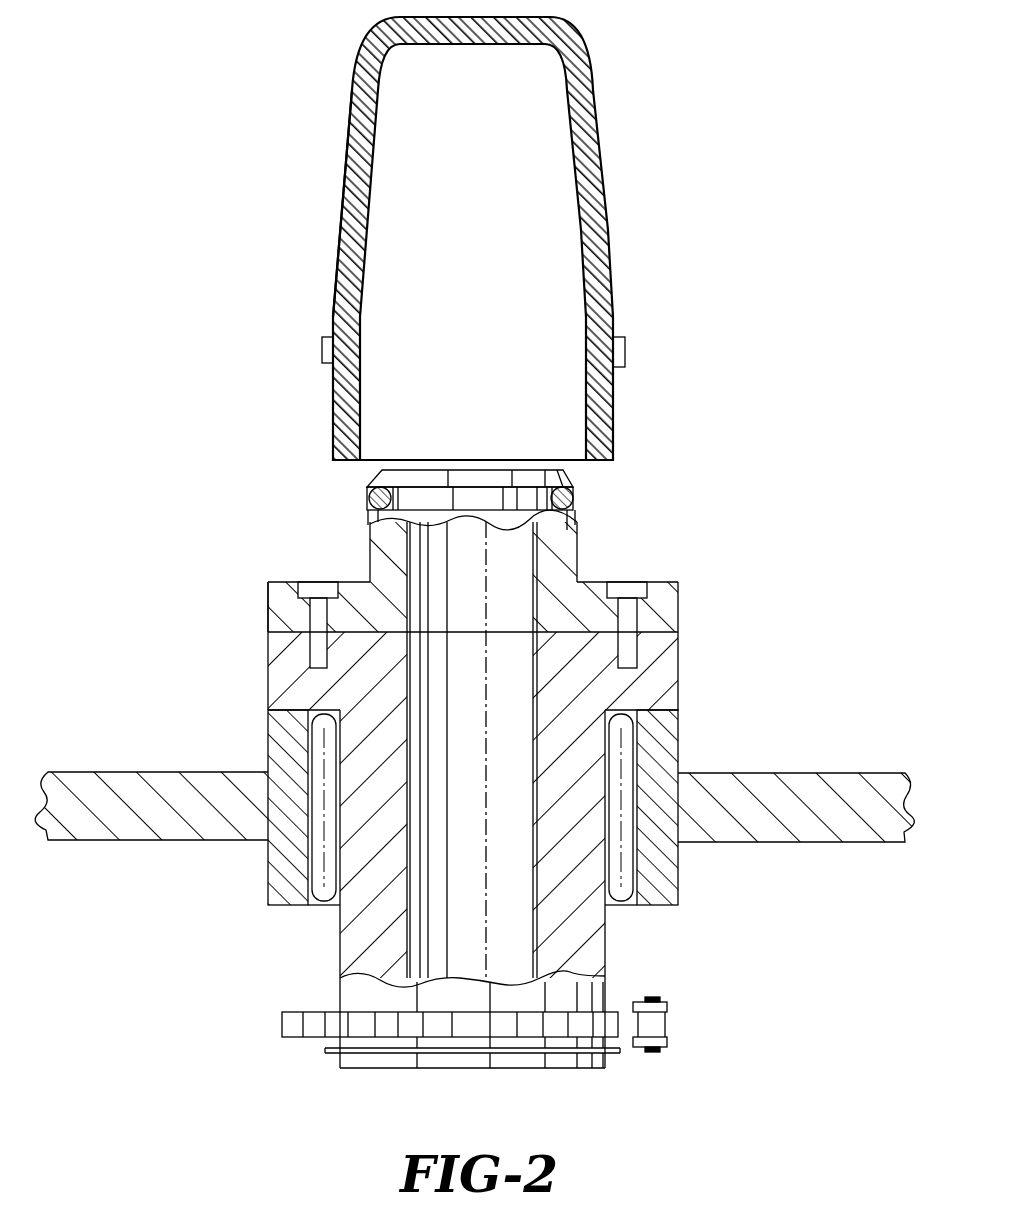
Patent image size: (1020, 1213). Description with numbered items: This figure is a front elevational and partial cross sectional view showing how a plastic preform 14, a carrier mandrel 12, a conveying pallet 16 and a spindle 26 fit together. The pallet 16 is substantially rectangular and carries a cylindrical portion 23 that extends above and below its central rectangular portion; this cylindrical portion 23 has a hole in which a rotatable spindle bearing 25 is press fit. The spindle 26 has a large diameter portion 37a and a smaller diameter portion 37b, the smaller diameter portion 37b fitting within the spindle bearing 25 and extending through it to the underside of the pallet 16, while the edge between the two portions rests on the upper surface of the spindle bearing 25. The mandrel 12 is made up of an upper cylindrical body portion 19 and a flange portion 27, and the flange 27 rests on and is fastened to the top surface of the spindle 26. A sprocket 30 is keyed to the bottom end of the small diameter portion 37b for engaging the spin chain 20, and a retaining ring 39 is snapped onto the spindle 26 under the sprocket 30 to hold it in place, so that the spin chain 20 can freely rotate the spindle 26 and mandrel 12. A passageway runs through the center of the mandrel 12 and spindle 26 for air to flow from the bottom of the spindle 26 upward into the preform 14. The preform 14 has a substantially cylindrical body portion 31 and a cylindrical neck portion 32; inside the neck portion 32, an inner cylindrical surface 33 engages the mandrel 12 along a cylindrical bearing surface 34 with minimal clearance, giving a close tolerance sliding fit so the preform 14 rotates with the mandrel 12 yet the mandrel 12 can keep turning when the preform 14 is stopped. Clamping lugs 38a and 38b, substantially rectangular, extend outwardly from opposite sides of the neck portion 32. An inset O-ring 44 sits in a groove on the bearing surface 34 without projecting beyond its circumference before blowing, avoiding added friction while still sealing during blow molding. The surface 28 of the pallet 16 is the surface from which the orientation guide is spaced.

The mandrel 12 is at (268, 608).
The preform 14 is at (592, 208).
The pallet 16 is at (840, 825).
The upper cylindrical body portion 19 is at (572, 540).
The spin chain 20 is at (660, 1003).
The cylindrical portion 23 is at (268, 740).
The spindle bearing 25 is at (627, 867).
The spindle 26 is at (268, 680).
The flange portion 27 is at (665, 613).
The surface 28 is at (762, 773).
The sprocket 30 is at (622, 1030).
The body portion 31 is at (340, 240).
The neck portion 32 is at (333, 405).
The inner cylindrical surface 33 is at (360, 413).
The cylindrical bearing surface 34 is at (578, 556).
The large diameter portion 37a is at (677, 670).
The small diameter portion 37b is at (605, 920).
The clamping lug 38a is at (322, 348).
The clamping lug 38b is at (625, 350).
The retaining ring 39 is at (330, 1050).
The O-ring 44 is at (573, 493).